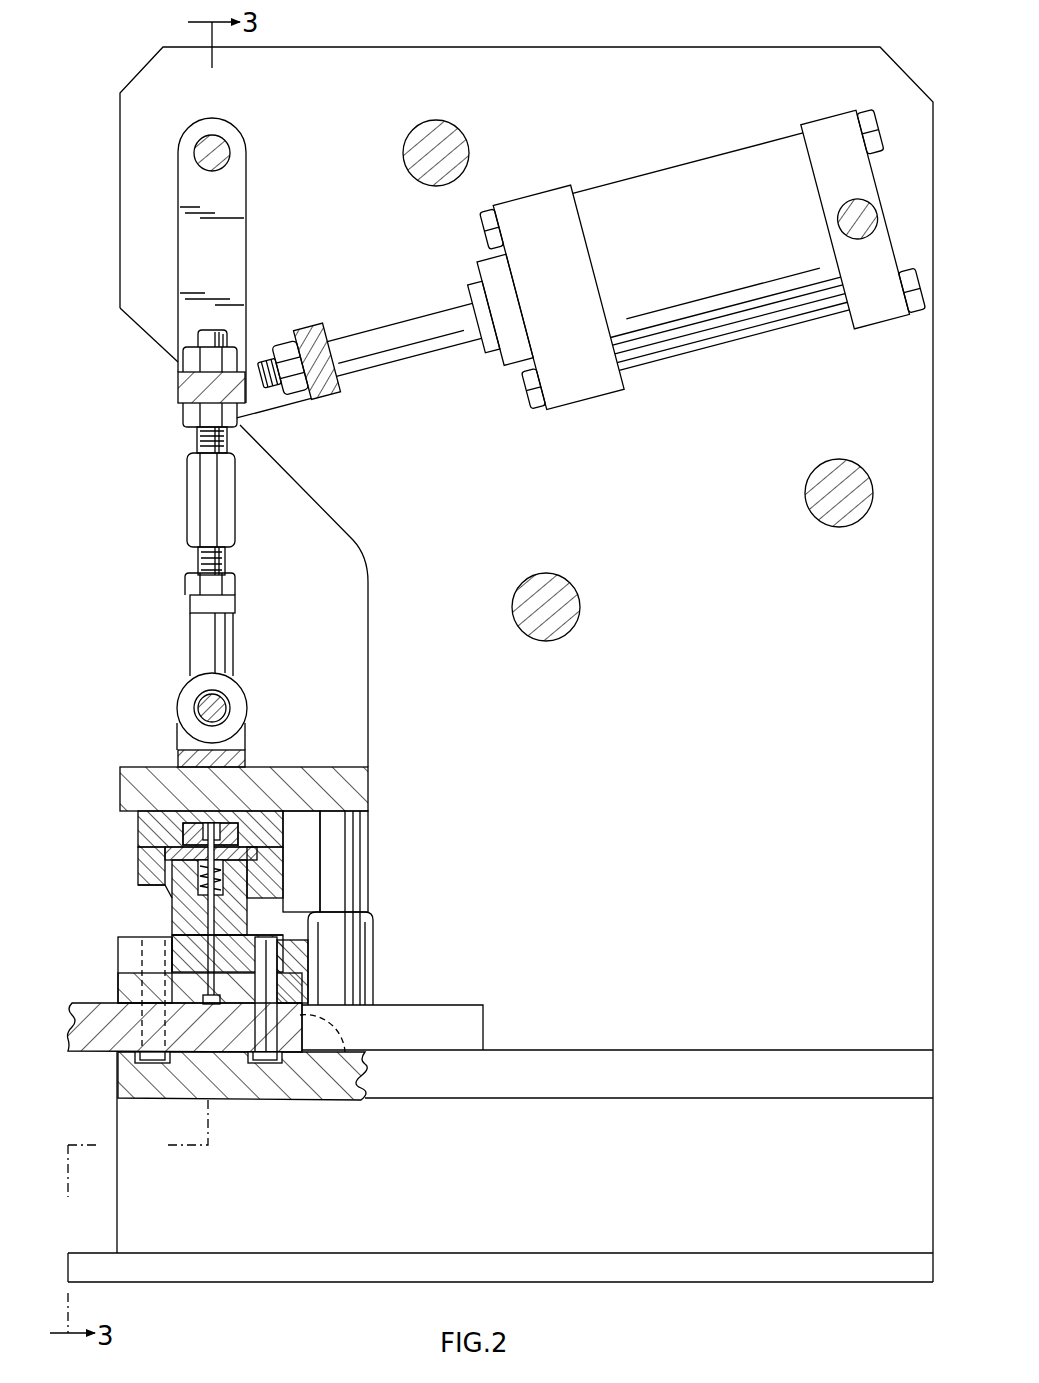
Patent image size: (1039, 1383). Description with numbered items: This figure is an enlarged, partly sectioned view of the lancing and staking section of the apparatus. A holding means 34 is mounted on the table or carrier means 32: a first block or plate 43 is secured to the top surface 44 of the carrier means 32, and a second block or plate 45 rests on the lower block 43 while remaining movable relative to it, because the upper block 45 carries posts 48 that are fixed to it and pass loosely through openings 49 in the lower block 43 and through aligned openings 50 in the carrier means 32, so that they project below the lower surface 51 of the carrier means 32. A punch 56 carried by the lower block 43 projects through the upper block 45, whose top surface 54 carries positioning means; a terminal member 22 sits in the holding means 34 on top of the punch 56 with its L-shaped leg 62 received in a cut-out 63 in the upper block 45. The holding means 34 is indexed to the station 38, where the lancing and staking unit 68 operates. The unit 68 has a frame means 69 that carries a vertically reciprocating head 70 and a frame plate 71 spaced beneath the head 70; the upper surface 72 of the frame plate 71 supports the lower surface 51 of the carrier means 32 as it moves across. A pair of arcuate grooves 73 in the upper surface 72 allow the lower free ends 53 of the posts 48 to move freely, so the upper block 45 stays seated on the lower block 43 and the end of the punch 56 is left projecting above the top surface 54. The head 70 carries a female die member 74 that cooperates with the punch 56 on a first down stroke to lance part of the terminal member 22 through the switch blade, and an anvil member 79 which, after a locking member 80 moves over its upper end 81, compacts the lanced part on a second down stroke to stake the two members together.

The terminal member 22 is at (190, 927).
The table or carrier means 32 is at (100, 1043).
The holding means 34 is at (112, 940).
The station 38 is at (110, 802).
The first block or plate 43 is at (293, 985).
The top surface 44 is at (103, 1003).
The second block or plate 45 is at (283, 965).
The posts 48 is at (268, 955).
The openings 49 is at (280, 963).
The aligned openings 50 is at (280, 1020).
The lower surface 51 is at (235, 1060).
The lower free ends 53 is at (135, 1063).
The top surface 54 is at (367, 861).
The punch 56 is at (213, 965).
The L-shaped leg 62 is at (167, 950).
The cut-out 63 is at (130, 960).
The lancing and staking unit 68 is at (152, 572).
The frame means 69 is at (136, 241).
The reciprocating head 70 is at (298, 840).
The frame plate 71 is at (447, 1083).
The upper surface 72 is at (447, 1050).
The arcuate grooves 73 is at (162, 1063).
The female die member 74 is at (237, 897).
The anvil member 79 is at (202, 903).
The locking member 80 is at (185, 833).
The upper end 81 is at (265, 772).